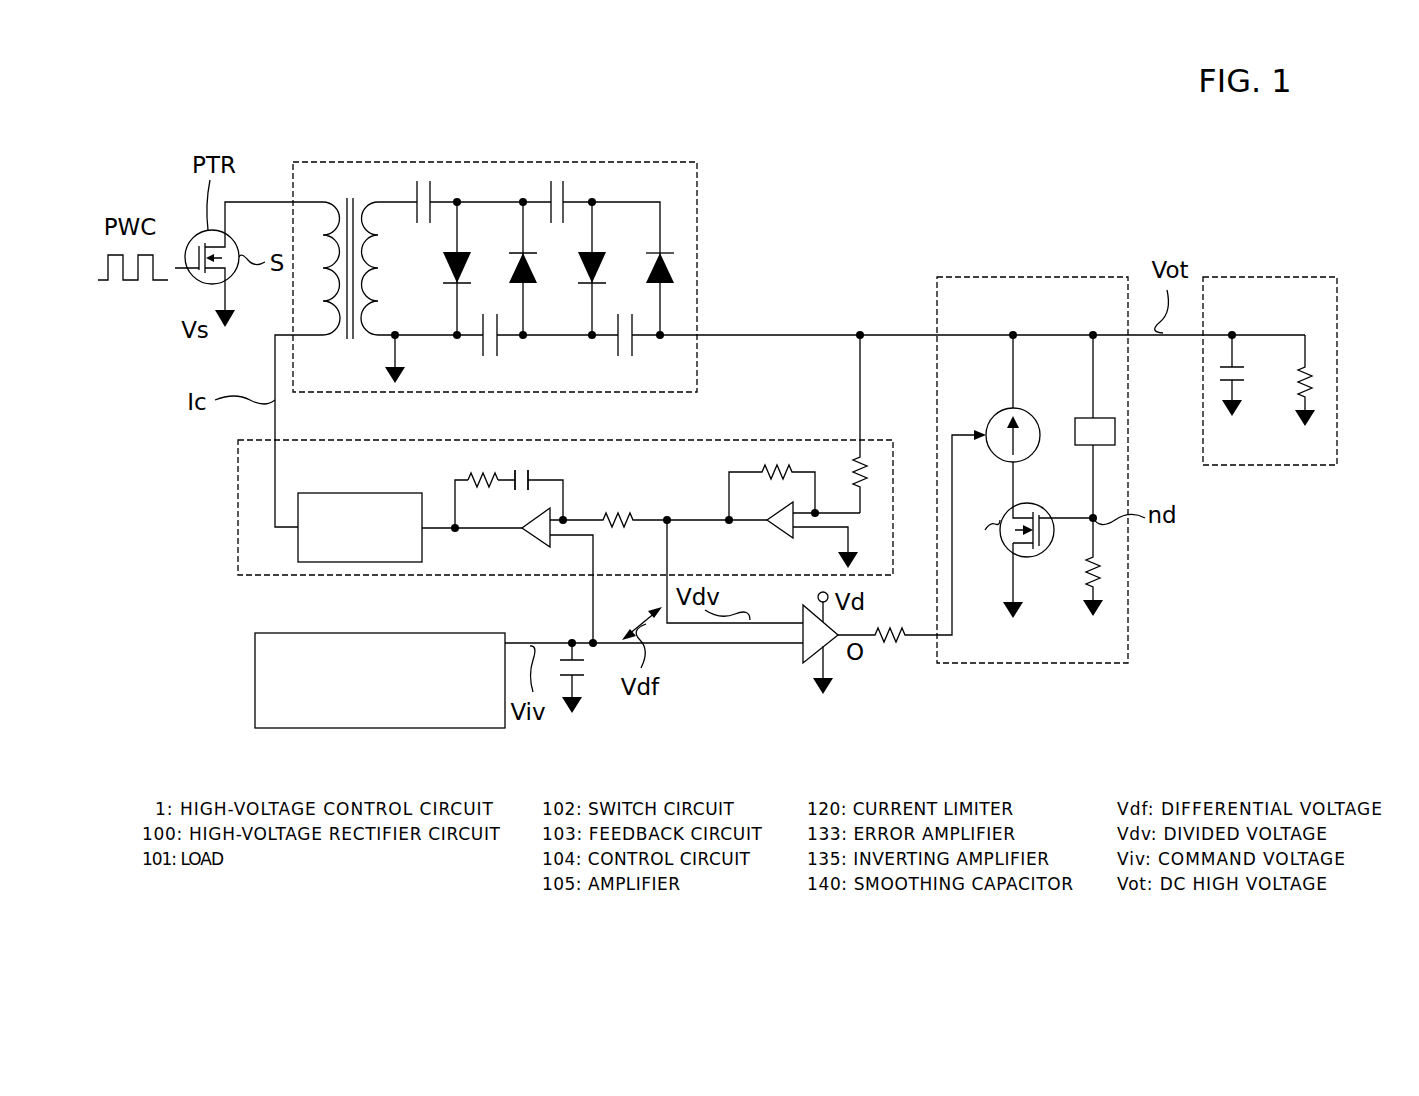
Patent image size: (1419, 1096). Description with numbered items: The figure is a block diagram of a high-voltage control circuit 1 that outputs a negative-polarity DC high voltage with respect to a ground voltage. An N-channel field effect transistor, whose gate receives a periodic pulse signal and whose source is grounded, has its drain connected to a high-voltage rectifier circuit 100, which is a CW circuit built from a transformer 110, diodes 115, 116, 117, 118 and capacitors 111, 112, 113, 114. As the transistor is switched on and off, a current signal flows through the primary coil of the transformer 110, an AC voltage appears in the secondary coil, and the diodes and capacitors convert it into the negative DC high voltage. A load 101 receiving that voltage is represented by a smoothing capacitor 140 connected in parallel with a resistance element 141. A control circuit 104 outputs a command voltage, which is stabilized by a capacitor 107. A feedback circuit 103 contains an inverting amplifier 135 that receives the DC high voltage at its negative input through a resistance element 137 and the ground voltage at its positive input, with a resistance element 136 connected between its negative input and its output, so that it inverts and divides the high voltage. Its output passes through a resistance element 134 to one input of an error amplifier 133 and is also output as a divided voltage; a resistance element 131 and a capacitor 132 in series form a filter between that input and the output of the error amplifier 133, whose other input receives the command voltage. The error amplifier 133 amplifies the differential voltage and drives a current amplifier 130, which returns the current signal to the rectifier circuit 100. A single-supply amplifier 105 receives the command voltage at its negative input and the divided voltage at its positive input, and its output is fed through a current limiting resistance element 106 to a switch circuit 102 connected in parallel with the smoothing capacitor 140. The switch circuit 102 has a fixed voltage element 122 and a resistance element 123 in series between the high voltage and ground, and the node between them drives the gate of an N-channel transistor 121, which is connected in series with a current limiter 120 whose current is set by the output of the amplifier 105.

The high-voltage control circuit 1 is at (895, 176).
The high-voltage rectifier circuit 100 is at (697, 176).
The load 101 is at (1263, 275).
The switch circuit 102 is at (1025, 275).
The feedback circuit 103 is at (238, 465).
The control circuit 104 is at (255, 680).
The amplifier 105 is at (805, 665).
The current limiting resistance element 106 is at (888, 650).
The capacitor 107 is at (582, 662).
The transformer 110 is at (350, 190).
The capacitor 111 is at (420, 180).
The capacitor 112 is at (555, 180).
The capacitor 113 is at (490, 358).
The capacitor 114 is at (627, 358).
The diode 115 is at (462, 262).
The diode 116 is at (528, 284).
The diode 117 is at (597, 262).
The diode 118 is at (673, 268).
The current limiter 120 is at (1033, 418).
The N-channel transistor 121 is at (1030, 504).
The fixed voltage element 122 is at (1115, 437).
The resistance element 123 is at (1100, 575).
The current amplifier 130 is at (298, 553).
The resistance element 131 is at (468, 478).
The capacitor 132 is at (533, 470).
The error amplifier 133 is at (538, 545).
The resistance element 134 is at (630, 515).
The inverting amplifier 135 is at (778, 538).
The resistance element 136 is at (762, 470).
The resistance element 137 is at (855, 458).
The smoothing capacitor 140 is at (1243, 380).
The resistance element 141 is at (1317, 375).